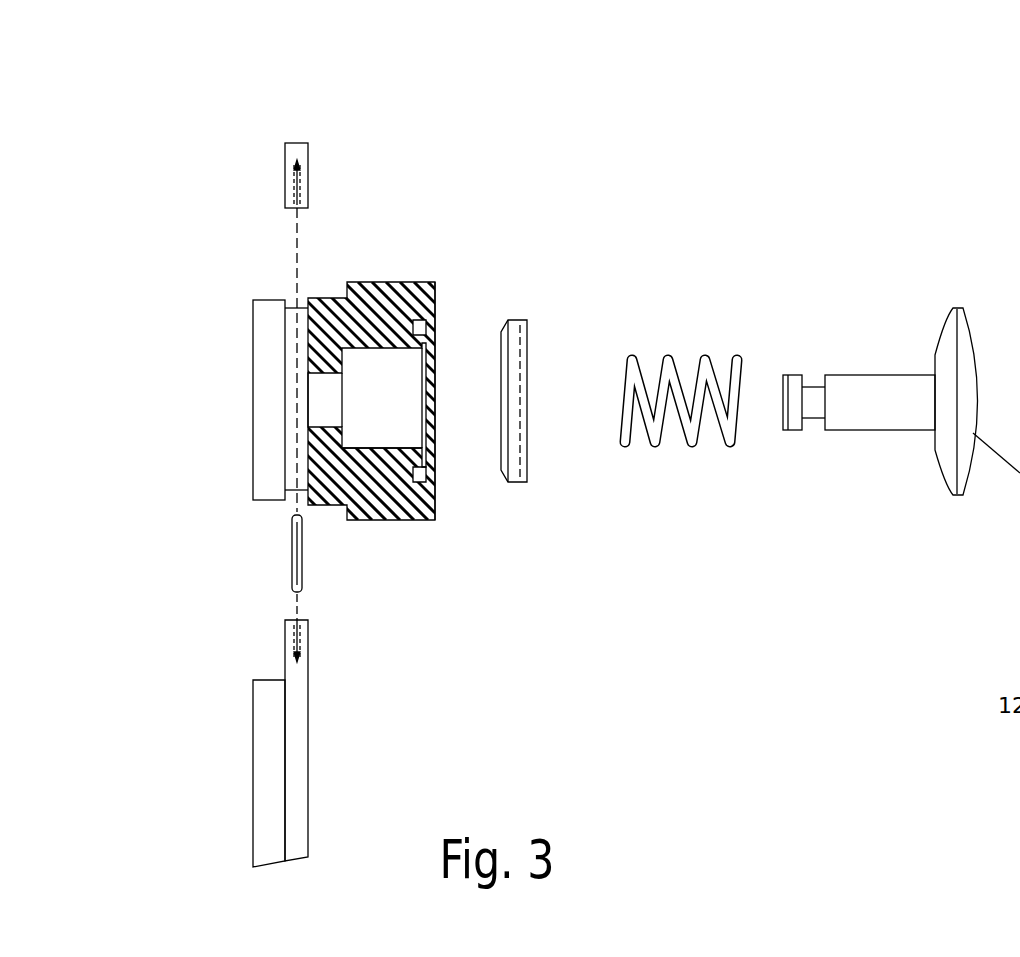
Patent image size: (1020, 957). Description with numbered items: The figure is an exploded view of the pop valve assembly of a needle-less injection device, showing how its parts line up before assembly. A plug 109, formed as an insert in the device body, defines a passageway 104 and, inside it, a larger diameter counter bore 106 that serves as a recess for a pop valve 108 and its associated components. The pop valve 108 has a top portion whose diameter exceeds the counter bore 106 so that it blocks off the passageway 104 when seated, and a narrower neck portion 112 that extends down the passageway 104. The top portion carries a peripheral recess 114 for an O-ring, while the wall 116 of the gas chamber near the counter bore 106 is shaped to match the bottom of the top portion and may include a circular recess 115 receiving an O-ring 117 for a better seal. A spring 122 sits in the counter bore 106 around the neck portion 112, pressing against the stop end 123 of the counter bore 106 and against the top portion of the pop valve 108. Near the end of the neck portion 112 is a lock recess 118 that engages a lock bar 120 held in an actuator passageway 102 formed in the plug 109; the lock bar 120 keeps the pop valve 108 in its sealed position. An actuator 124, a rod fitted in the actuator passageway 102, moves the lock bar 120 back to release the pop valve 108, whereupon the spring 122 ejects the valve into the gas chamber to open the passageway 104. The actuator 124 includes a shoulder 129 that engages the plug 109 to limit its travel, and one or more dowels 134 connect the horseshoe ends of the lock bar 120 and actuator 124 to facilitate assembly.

The actuator passageway 102 is at (293, 478).
The passageway 104 is at (358, 381).
The counter bore 106 is at (380, 363).
The pop valve 108 is at (880, 346).
The plug 109 is at (330, 317).
The neck portion 112 is at (877, 430).
The peripheral recess 114 is at (894, 356).
The circular recess 115 is at (427, 326).
The wall 116 is at (437, 292).
The O-ring 117 is at (530, 348).
The lock recess 118 is at (810, 387).
The lock bar 120 is at (285, 180).
The spring 122 is at (670, 363).
The stop end 123 is at (343, 433).
The actuator 124 is at (300, 752).
The shoulder 129 is at (270, 772).
The dowel 134 is at (292, 552).